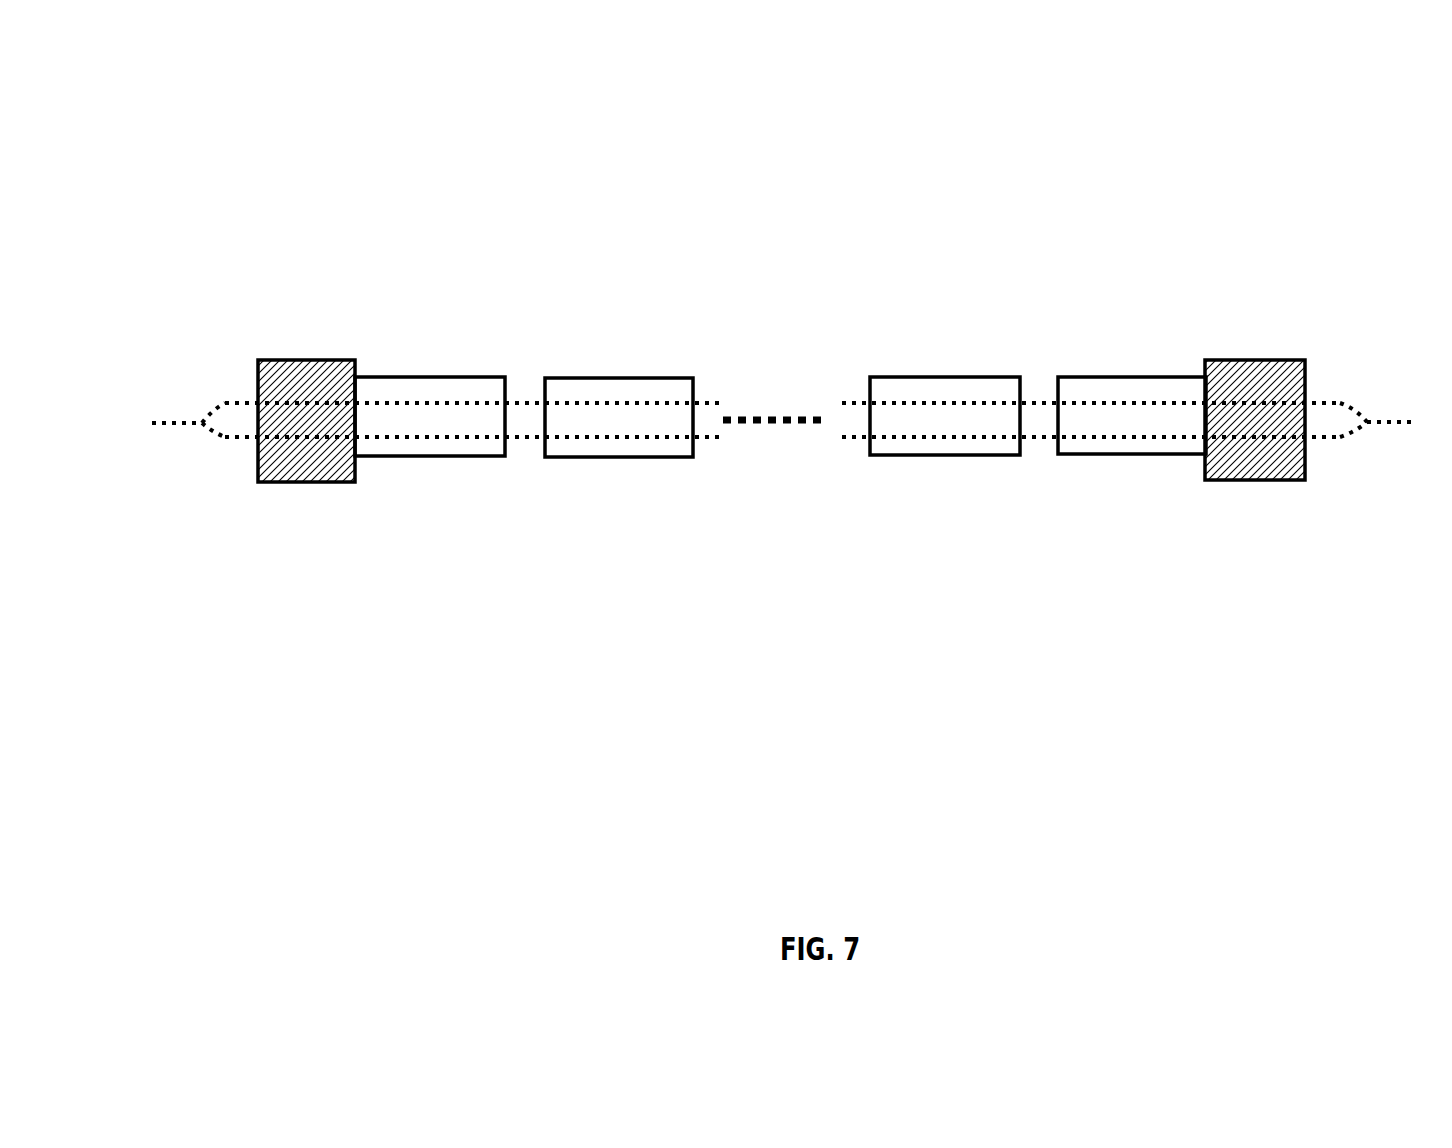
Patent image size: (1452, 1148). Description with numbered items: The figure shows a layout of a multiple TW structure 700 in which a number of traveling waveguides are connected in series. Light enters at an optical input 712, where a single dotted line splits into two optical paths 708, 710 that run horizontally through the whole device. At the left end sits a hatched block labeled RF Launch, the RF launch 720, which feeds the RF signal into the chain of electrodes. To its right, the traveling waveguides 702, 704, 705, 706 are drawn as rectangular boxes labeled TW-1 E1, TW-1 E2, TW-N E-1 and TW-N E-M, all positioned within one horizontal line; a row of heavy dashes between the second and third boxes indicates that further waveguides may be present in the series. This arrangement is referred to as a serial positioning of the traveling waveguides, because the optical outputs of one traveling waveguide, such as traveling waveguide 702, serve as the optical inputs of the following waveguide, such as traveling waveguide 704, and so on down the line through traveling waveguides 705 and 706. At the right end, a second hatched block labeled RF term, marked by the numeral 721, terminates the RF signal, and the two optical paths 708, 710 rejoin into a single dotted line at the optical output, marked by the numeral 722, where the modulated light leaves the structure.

The multiple TW structure 700 is at (1165, 119).
The traveling waveguide 702 is at (500, 457).
The traveling waveguide 704 is at (673, 457).
The traveling waveguide 705 is at (980, 375).
The traveling waveguide 706 is at (1138, 375).
The optical path 708 is at (483, 400).
The optical path 710 is at (390, 438).
The optical input 712 is at (165, 423).
The RF launch 720 is at (347, 360).
The RF termination 721 is at (1210, 360).
The optical output 722 is at (1400, 422).